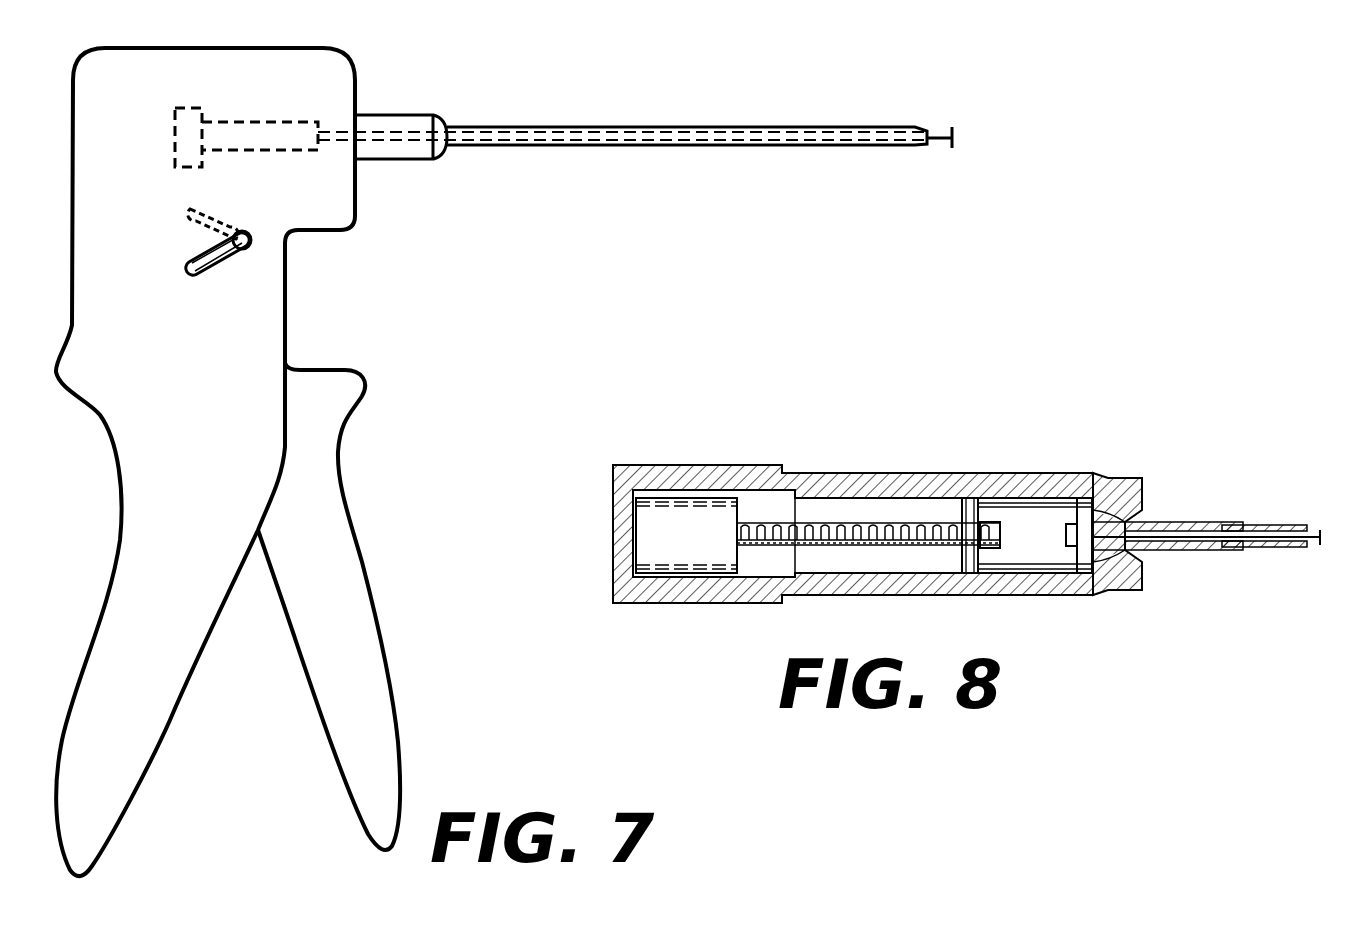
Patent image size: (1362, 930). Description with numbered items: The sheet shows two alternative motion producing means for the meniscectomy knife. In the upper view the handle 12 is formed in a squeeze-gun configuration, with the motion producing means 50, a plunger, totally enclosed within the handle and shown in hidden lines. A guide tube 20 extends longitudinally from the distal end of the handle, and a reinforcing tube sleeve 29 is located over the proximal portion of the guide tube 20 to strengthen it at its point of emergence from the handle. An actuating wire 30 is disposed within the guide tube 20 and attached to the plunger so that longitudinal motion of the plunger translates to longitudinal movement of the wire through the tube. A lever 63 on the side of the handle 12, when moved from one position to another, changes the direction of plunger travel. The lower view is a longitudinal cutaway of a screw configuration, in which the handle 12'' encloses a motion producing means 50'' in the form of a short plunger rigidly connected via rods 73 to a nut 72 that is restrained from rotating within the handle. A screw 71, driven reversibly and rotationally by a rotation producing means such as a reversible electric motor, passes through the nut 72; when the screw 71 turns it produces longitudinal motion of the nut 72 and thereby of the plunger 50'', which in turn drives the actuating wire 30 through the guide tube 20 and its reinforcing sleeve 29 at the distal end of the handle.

In FIG. 7, the handle 12 is at (228, 462).
In FIG. 8, the handle 12'' is at (853, 520).
In FIG. 7, the guide tube 20 is at (720, 128).
In FIG. 8, the guide tube 20 is at (1275, 525).
In FIG. 7, the reinforcing tube sleeve 29 is at (410, 122).
In FIG. 8, the reinforcing tube sleeve 29 is at (1196, 522).
In FIG. 7, the actuating wire 30 is at (348, 110).
In FIG. 8, the actuating wire 30 is at (1095, 585).
In FIG. 7, the motion producing means 50 is at (246, 119).
In FIG. 8, the motion producing means 50'' is at (889, 516).
In FIG. 7, the lever 63 is at (195, 256).
In FIG. 8, the screw 71 is at (878, 530).
In FIG. 8, the nut 72 is at (968, 505).
In FIG. 8, the rods 73 is at (1030, 506).